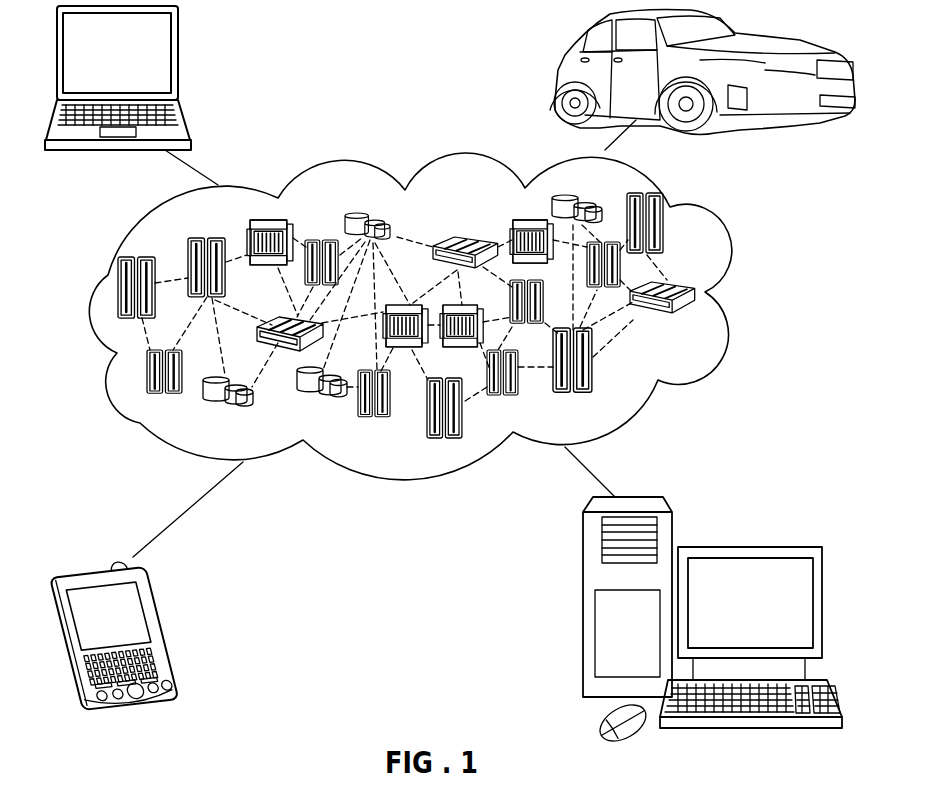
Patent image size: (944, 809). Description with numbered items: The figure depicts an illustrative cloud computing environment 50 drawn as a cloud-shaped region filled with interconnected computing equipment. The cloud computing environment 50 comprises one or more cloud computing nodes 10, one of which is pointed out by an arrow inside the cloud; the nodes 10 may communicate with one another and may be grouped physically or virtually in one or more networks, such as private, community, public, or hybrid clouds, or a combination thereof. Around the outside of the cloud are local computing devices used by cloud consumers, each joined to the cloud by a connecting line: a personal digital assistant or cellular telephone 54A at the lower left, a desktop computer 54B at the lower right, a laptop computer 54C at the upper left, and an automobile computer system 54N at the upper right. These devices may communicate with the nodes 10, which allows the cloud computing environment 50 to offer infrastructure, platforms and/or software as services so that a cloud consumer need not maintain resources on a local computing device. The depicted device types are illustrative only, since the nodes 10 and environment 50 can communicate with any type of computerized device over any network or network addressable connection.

The cloud computing node 10 is at (700, 321).
The cloud computing environment 50 is at (747, 298).
The personal digital assistant or cellular telephone 54A is at (168, 625).
The desktop computer 54B is at (750, 546).
The laptop computer 54C is at (178, 61).
The automobile computer system 54N is at (557, 72).